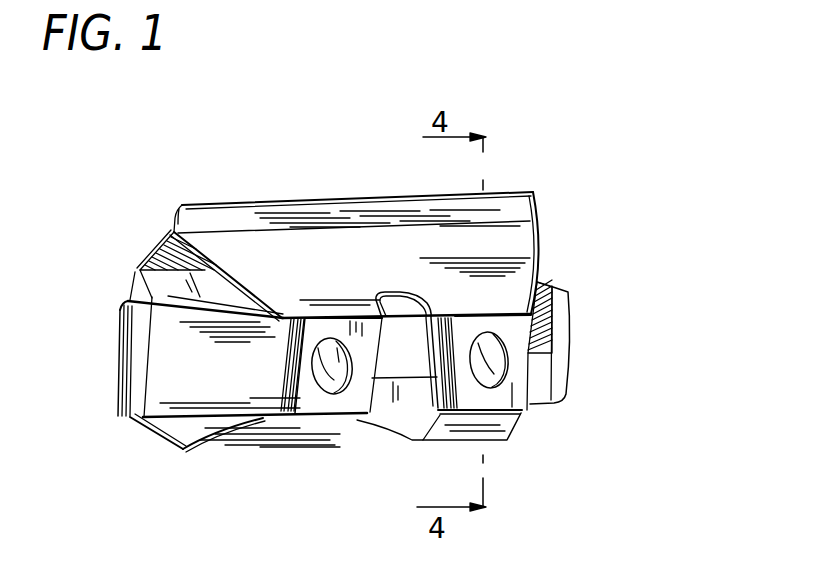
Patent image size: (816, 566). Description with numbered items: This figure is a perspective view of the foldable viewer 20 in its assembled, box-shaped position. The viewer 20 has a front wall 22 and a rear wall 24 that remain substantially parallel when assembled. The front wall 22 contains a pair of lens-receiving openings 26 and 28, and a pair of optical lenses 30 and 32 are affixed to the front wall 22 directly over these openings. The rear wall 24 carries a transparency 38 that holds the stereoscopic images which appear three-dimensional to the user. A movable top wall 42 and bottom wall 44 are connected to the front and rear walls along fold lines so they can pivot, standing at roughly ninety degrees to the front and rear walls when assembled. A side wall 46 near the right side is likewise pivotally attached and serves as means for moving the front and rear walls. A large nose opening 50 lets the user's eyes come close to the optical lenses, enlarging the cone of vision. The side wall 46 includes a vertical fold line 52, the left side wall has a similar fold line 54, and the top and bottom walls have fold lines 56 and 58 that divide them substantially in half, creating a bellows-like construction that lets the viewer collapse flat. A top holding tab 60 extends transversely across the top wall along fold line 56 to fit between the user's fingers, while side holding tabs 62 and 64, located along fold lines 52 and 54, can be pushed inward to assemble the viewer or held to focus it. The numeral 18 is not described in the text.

The front wall 18 is at (177, 383).
The foldable viewer 20 is at (558, 255).
The front wall 22 is at (517, 405).
The rear wall 24 is at (152, 280).
The lens-receiving opening 26 is at (333, 380).
The lens-receiving opening 28 is at (493, 372).
The optical lens 30 is at (323, 369).
The optical lens 32 is at (490, 352).
The transparency 38 is at (165, 262).
The top wall 42 is at (528, 245).
The bottom wall 44 is at (250, 436).
The side wall 46 is at (540, 358).
The nose opening 50 is at (420, 440).
The fold line 52 is at (567, 308).
The fold line 54 is at (150, 333).
The fold line 56 is at (518, 216).
The fold line 58 is at (183, 450).
The top holding tab 60 is at (241, 212).
The side holding tab 62 is at (558, 333).
The side holding tab 64 is at (140, 363).